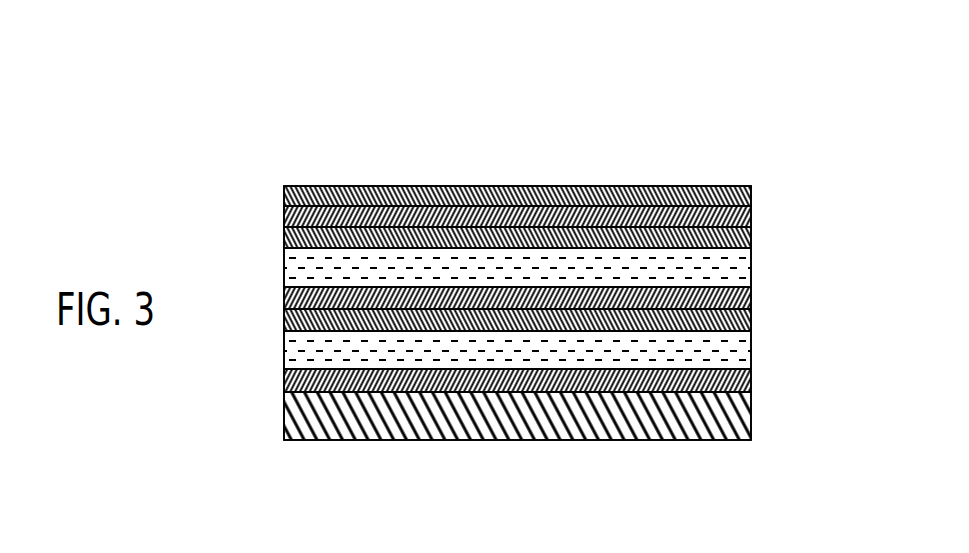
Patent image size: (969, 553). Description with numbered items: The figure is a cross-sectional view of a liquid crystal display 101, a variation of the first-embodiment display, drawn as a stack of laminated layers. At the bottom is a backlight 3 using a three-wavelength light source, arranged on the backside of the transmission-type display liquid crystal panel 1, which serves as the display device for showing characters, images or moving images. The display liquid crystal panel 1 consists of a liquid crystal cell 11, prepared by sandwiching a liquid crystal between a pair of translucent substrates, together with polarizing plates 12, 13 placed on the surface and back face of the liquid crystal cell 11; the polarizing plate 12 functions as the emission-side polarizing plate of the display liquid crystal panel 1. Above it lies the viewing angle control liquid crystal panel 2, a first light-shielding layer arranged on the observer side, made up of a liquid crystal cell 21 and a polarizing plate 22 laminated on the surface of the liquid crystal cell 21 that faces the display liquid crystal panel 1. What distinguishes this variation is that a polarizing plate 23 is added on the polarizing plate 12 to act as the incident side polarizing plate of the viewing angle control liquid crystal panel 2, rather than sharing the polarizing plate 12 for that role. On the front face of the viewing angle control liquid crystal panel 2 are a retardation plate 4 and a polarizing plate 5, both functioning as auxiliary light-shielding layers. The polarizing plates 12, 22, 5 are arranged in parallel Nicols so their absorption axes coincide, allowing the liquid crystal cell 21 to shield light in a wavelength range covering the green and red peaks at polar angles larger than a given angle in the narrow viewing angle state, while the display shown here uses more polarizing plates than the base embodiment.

The liquid crystal display 101 is at (778, 101).
The polarizing plate 5 is at (752, 192).
The retardation plate 4 is at (752, 212).
The viewing angle control liquid crystal panel 2 is at (592, 263).
The polarizing plate 22 is at (752, 232).
The liquid crystal cell 21 is at (752, 258).
The polarizing plate 23 is at (563, 293).
The display liquid crystal panel 1 is at (592, 351).
The polarizing plate 12 is at (752, 315).
The liquid crystal cell 11 is at (750, 352).
The polarizing plate 13 is at (564, 383).
The backlight 3 is at (753, 415).